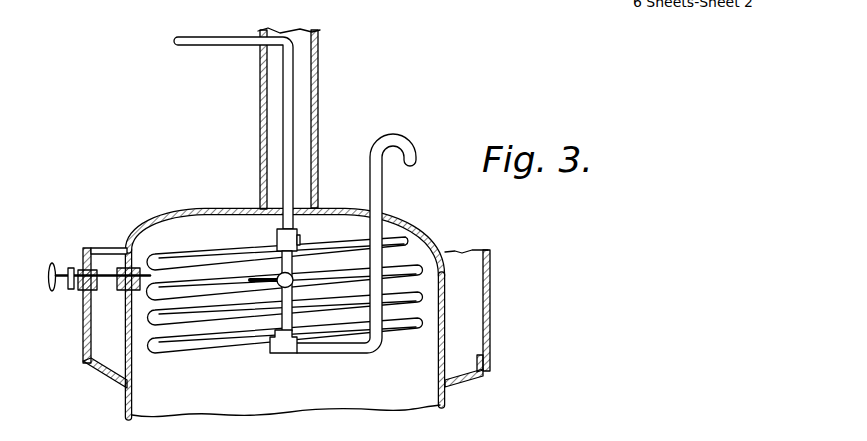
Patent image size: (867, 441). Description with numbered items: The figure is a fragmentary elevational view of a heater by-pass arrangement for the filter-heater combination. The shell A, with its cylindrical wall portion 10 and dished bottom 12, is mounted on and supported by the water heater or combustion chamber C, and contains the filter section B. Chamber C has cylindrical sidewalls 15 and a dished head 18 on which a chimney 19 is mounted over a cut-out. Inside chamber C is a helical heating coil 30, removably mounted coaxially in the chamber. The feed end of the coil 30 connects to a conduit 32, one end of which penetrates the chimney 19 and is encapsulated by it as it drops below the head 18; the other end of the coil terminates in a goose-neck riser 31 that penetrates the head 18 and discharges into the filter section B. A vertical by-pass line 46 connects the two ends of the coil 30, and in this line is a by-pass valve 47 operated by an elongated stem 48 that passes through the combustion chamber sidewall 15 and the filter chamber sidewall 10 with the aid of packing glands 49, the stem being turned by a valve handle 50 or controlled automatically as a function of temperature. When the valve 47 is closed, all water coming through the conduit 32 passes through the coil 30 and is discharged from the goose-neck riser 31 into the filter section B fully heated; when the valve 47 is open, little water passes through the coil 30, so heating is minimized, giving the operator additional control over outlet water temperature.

The cylindrical wall portion 10 is at (83, 320).
The bottom 12 is at (110, 376).
The cylindrical sidewalls 15 is at (132, 356).
The head 18 is at (227, 190).
The chimney 19 is at (318, 83).
The helical heating coil 30 is at (212, 351).
The goose-neck riser 31 is at (407, 150).
The conduit 32 is at (211, 20).
The vertical by-pass line 46 is at (277, 246).
The by-pass valve 47 is at (293, 286).
The elongated stem 48 is at (127, 305).
The packing glands 49 is at (78, 248).
The valve handle 50 is at (51, 291).
The shell A is at (255, 307).
The filter section B is at (455, 328).
The water heater or combustion chamber C is at (356, 376).